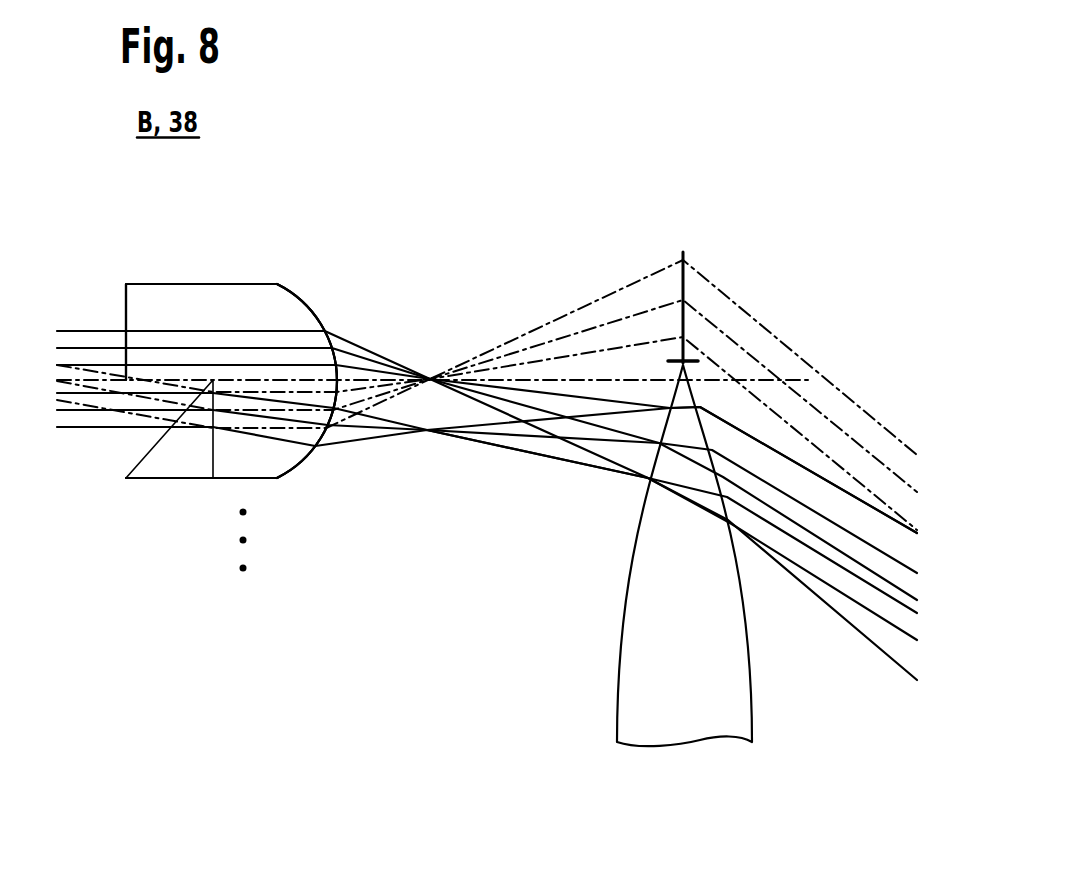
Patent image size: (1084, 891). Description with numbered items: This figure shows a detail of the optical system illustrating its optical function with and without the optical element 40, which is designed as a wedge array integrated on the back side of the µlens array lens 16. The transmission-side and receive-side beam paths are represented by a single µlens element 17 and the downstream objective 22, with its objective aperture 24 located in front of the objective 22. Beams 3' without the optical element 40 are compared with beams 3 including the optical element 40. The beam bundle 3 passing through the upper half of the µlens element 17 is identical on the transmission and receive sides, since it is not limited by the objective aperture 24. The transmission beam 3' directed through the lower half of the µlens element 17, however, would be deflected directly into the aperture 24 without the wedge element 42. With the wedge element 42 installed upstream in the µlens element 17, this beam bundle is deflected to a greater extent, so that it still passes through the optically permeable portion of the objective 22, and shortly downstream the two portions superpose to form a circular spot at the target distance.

The optical element 40 is at (112, 273).
The lens 16 is at (285, 259).
The µlens element 17 is at (298, 293).
The wedge element 42 is at (170, 463).
The beam bundle 3 is at (487, 505).
The transmission beam 3' is at (487, 379).
The aperture 24 is at (688, 285).
The objective 22 is at (730, 697).